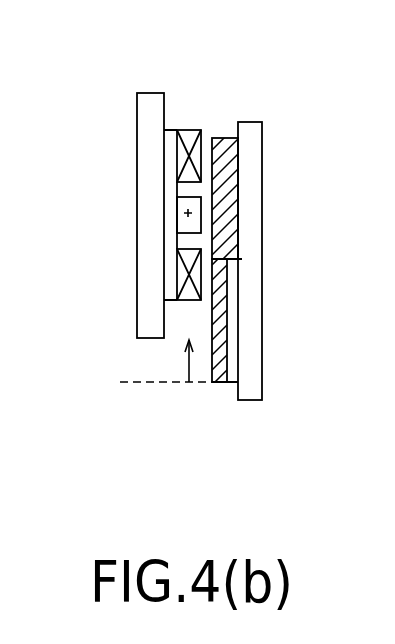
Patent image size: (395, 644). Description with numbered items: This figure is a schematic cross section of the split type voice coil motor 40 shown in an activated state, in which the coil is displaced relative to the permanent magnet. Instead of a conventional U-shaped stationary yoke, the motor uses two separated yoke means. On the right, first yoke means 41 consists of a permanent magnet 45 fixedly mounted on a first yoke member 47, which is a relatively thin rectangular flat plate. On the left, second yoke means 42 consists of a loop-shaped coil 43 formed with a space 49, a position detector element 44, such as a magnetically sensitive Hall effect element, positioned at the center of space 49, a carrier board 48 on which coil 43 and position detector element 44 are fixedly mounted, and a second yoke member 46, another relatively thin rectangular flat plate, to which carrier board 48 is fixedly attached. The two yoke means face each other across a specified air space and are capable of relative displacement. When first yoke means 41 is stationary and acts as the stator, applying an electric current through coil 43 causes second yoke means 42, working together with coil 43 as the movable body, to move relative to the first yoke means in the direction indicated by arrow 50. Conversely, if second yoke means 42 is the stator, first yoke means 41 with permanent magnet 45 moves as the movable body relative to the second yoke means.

The voice coil motor 40 is at (192, 415).
The first yoke means 41 is at (268, 157).
The second yoke means 42 is at (130, 137).
The loop-shaped coil 43 is at (185, 130).
The position detector element 44 is at (188, 219).
The permanent magnet 45 is at (222, 138).
The second yoke member 46 is at (145, 310).
The first yoke member 47 is at (253, 343).
The carrier board 48 is at (170, 300).
The space 49 is at (185, 242).
The arrow 50 is at (187, 366).